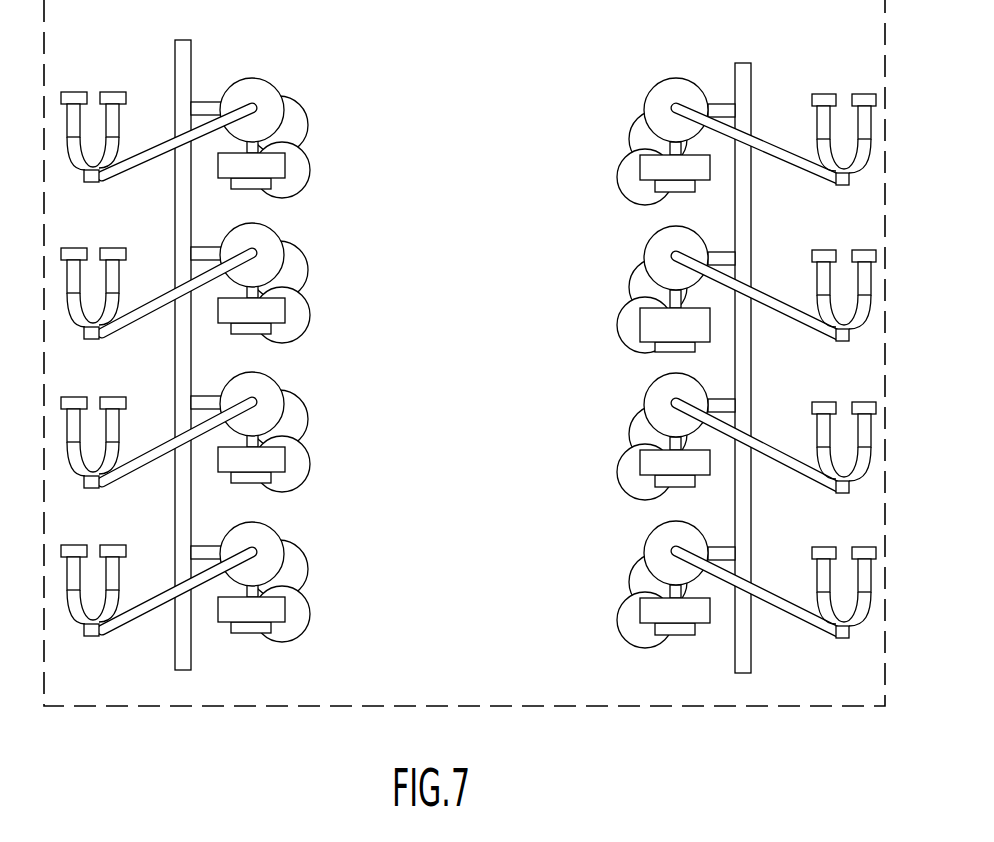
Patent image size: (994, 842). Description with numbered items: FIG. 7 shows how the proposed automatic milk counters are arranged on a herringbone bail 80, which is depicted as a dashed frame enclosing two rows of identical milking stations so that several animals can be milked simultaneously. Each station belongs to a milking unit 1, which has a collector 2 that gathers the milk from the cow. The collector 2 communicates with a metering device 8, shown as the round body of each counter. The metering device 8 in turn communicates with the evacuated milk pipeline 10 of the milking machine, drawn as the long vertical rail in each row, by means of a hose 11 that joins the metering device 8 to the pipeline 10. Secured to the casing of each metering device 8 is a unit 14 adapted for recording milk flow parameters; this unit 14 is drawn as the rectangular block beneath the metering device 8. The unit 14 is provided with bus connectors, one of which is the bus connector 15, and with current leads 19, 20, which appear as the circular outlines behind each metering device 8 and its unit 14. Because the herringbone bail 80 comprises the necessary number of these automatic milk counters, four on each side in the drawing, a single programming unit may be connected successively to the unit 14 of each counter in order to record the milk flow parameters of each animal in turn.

The milking unit 1 is at (116, 120).
The collector 2 is at (97, 183).
The metering device 8 is at (285, 243).
The evacuated milk pipeline 10 is at (188, 656).
The hose 11 is at (203, 100).
The unit for recording milk flow parameters 14 is at (278, 325).
The bus connector 15 is at (660, 345).
The current lead 19 is at (310, 170).
The current lead 20 is at (303, 567).
The herringbone bail 80 is at (107, 706).